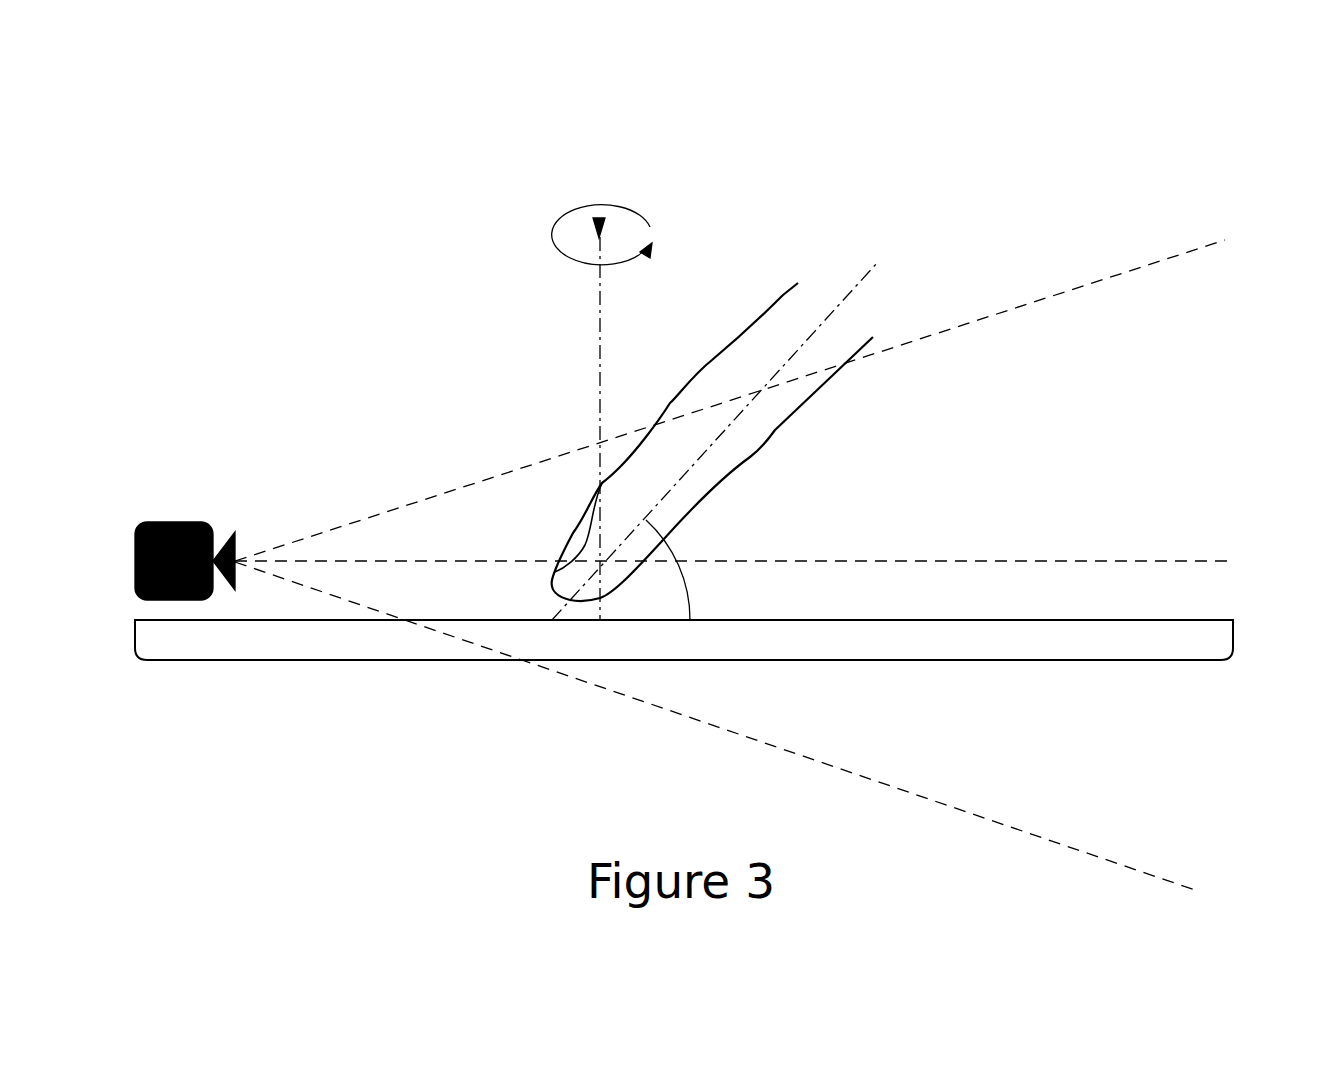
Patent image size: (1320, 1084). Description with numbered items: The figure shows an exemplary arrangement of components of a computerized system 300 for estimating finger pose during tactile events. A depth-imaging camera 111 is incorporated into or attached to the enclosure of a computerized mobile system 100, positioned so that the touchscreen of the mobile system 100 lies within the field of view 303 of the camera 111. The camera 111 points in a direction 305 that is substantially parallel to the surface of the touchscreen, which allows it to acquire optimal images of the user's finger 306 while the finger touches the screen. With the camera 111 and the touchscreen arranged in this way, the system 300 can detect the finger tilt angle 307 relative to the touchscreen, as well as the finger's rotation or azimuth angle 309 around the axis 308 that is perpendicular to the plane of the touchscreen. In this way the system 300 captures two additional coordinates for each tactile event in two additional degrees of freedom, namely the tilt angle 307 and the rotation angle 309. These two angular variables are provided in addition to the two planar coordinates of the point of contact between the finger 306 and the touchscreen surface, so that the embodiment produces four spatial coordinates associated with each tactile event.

The computerized mobile system 100 is at (1200, 660).
The depth-imaging camera 111 is at (165, 522).
The computerized system 300 is at (868, 170).
The field of view 303 is at (1007, 308).
The direction 305 is at (905, 562).
The finger 306 is at (780, 288).
The finger tilt angle 307 is at (690, 572).
The axis 308 is at (599, 218).
The rotation (azimuth) angle 309 is at (553, 237).